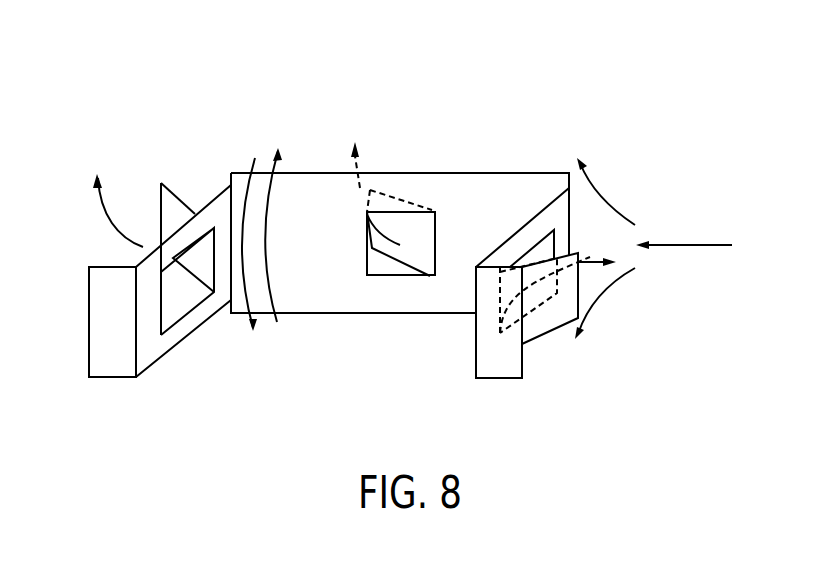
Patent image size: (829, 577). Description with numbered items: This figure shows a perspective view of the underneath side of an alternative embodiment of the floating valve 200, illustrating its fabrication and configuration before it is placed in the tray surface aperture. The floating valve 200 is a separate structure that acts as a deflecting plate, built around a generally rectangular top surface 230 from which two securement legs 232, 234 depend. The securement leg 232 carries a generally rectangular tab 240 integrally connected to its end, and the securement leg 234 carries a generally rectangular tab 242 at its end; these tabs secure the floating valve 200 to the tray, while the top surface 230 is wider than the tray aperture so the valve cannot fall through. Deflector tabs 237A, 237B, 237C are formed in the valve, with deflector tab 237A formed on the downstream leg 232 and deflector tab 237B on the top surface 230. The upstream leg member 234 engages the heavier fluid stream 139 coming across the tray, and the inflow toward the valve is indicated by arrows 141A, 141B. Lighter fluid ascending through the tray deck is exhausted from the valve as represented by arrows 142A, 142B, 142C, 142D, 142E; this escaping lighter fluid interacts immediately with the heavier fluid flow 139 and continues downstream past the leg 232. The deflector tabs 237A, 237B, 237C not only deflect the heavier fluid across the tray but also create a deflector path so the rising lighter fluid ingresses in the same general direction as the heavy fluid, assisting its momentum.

The floating valve 200 is at (505, 98).
The generally rectangular top surface 230 is at (432, 173).
The securement leg 232 is at (158, 347).
The securement leg 234 is at (510, 238).
The generally rectangular tab 240 is at (112, 357).
The generally rectangular tab 242 is at (498, 363).
The deflector tab 237A is at (178, 195).
The deflector tab 237B is at (370, 188).
The deflector tab 237C is at (545, 327).
The arrow representing exhausted lighter fluid 142A is at (247, 182).
The arrow representing exhausted lighter fluid 142B is at (117, 228).
The arrow representing exhausted lighter fluid 142C is at (265, 209).
The arrow representing exhausted lighter fluid 142D is at (367, 212).
The arrow representing exhausted lighter fluid 142E is at (593, 258).
The incoming light 141A is at (614, 205).
The incoming light 141B is at (610, 284).
The heavier fluid stream 139 is at (707, 240).